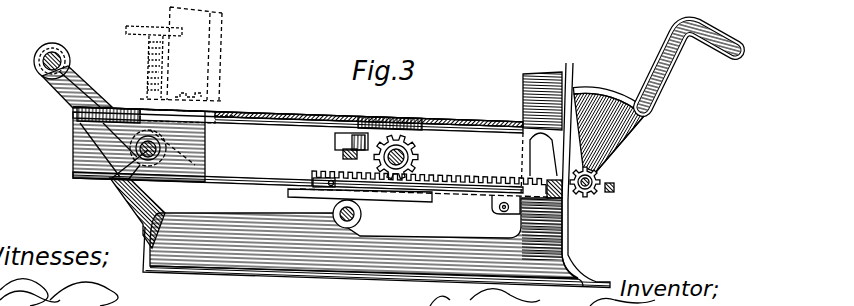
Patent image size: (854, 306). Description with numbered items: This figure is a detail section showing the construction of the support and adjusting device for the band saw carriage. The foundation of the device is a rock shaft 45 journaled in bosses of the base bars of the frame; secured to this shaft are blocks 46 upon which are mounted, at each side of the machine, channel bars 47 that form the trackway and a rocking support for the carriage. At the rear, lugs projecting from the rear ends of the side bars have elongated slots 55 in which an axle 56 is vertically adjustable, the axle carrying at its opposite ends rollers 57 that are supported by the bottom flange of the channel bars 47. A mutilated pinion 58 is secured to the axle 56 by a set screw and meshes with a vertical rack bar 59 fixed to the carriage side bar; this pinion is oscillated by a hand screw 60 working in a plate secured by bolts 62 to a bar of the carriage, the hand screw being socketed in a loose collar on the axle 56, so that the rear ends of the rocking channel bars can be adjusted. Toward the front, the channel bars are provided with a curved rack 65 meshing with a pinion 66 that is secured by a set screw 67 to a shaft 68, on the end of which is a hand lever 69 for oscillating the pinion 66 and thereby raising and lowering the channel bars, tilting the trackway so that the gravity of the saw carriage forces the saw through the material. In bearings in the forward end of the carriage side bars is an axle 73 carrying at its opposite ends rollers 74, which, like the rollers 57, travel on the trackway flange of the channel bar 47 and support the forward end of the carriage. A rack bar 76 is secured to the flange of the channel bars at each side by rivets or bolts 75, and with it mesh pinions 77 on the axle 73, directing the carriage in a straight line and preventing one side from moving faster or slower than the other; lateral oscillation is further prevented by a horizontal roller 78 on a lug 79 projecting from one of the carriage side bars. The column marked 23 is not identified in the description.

The standard column 23 is at (548, 100).
The rock shaft 45 is at (345, 228).
The blocks 46 is at (362, 215).
The channel bars 47 is at (75, 130).
The elongated slots 55 is at (128, 180).
The axle 56 is at (112, 180).
The rollers 57 is at (75, 150).
The mutilated pinion 58 is at (185, 165).
The vertical rack bar 59 is at (217, 113).
The hand screw 60 is at (150, 55).
The bolts 62 is at (560, 197).
The curved rack 65 is at (589, 92).
The pinion 66 is at (593, 198).
The set screw 67 is at (616, 186).
The shaft 68 is at (607, 170).
The hand lever 69 is at (706, 18).
The axle 73 is at (403, 118).
The rollers 74 is at (450, 113).
The rivets or bolts 75 is at (290, 189).
The rack bar 76 is at (452, 196).
The pinions 77 is at (420, 157).
The horizontal roller 78 is at (337, 135).
The lug 79 is at (345, 153).